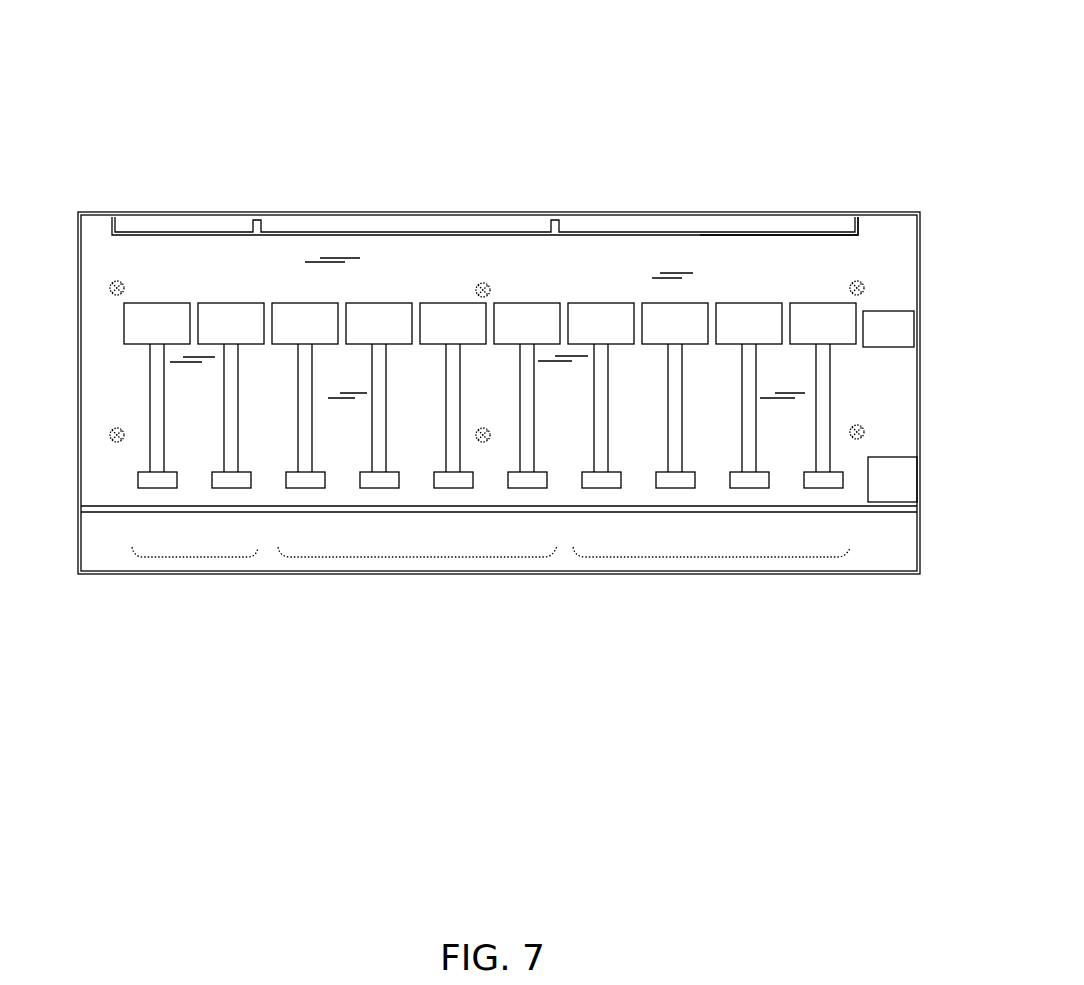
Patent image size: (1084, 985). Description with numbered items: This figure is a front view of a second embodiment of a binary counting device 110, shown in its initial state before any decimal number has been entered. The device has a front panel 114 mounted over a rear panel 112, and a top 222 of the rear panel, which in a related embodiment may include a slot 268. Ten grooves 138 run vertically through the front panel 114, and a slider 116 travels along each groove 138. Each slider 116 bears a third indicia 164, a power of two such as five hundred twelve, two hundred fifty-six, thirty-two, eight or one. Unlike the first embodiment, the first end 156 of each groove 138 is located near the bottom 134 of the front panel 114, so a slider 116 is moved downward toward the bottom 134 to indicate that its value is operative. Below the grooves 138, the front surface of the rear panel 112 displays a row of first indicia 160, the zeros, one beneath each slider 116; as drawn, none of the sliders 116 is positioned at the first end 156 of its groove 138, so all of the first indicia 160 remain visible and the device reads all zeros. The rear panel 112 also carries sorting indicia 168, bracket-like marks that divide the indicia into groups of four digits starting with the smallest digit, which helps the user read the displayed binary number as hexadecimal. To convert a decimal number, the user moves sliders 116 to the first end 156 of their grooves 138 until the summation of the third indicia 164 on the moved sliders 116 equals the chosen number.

The binary counting device 110 is at (241, 92).
The top of the rear panel 222 is at (330, 213).
The slot 268 is at (777, 232).
The third indicia 164 is at (158, 303).
The slider 116 is at (452, 303).
The front panel 114 is at (543, 280).
The groove 138 is at (608, 387).
The first end 156 is at (213, 480).
The first indicia 160 is at (378, 543).
The bottom of the front panel 134 is at (492, 510).
The rear panel 112 is at (635, 533).
The sorting indicia 168 is at (703, 555).